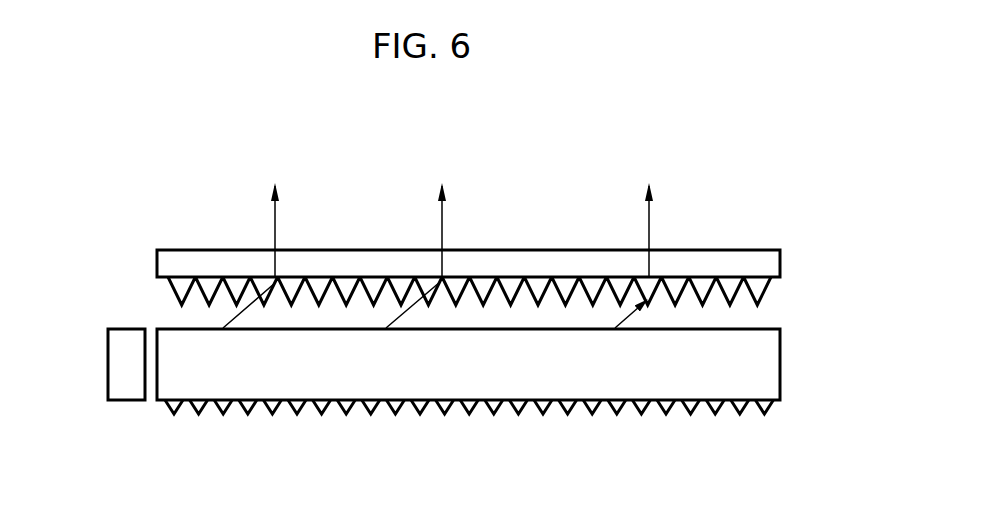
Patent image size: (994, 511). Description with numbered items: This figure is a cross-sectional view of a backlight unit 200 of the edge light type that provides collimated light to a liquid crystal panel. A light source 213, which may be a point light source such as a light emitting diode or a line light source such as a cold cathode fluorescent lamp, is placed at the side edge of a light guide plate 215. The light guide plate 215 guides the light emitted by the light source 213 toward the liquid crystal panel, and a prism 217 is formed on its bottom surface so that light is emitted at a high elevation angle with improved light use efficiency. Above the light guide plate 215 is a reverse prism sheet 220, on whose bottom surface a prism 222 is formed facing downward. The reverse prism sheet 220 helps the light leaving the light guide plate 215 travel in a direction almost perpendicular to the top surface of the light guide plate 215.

The backlight unit 200 is at (783, 206).
The light source 213 is at (113, 364).
The light guide plate 215 is at (772, 362).
The prism 217 is at (617, 409).
The reverse prism sheet 220 is at (772, 264).
The prism 222 is at (757, 295).